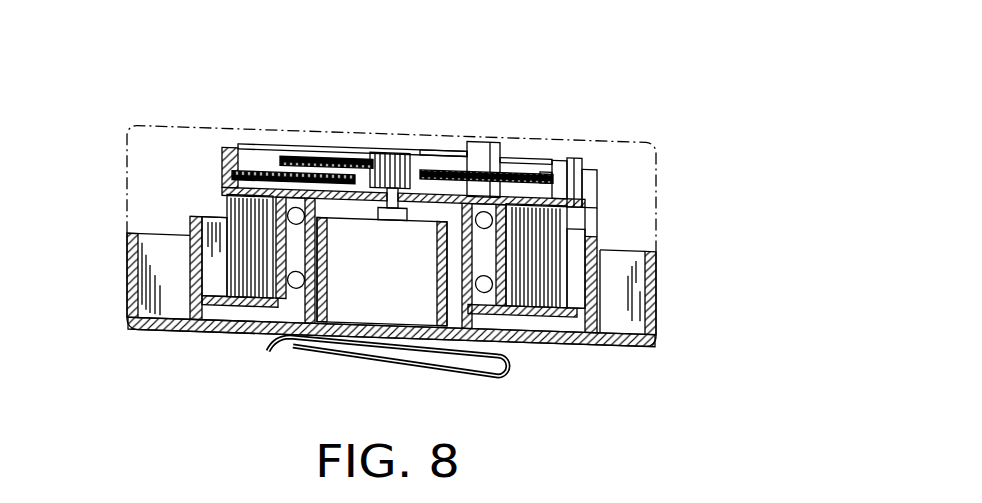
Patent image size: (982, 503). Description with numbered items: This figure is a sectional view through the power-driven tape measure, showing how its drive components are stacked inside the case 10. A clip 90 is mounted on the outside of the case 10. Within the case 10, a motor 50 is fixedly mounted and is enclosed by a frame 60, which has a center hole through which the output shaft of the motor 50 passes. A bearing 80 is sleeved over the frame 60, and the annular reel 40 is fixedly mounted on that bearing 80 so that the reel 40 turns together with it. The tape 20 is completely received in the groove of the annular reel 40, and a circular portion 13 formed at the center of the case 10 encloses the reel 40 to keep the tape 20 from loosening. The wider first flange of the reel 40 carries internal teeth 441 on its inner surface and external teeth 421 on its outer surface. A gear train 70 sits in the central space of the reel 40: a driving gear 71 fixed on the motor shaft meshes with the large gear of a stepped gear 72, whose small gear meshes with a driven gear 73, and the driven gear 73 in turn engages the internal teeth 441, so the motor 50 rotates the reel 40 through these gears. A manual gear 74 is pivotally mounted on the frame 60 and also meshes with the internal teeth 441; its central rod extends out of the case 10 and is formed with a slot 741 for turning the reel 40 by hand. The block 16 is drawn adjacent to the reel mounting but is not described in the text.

The case 10 is at (150, 336).
The circular portion 13 is at (598, 247).
The block 16 is at (594, 180).
The tape 20 is at (566, 223).
The annular reel 40 is at (582, 170).
The external teeth 421 is at (566, 165).
The internal teeth 441 is at (553, 162).
The motor 50 is at (393, 316).
The frame 60 is at (456, 148).
The gear train 70 is at (376, 152).
The driving gear 71 is at (398, 156).
The stepped gear 72 is at (300, 160).
The driven gear 73 is at (256, 162).
The manual gear 74 is at (434, 166).
The slot 741 is at (493, 142).
The bearing 80 is at (273, 307).
The clip 90 is at (507, 382).